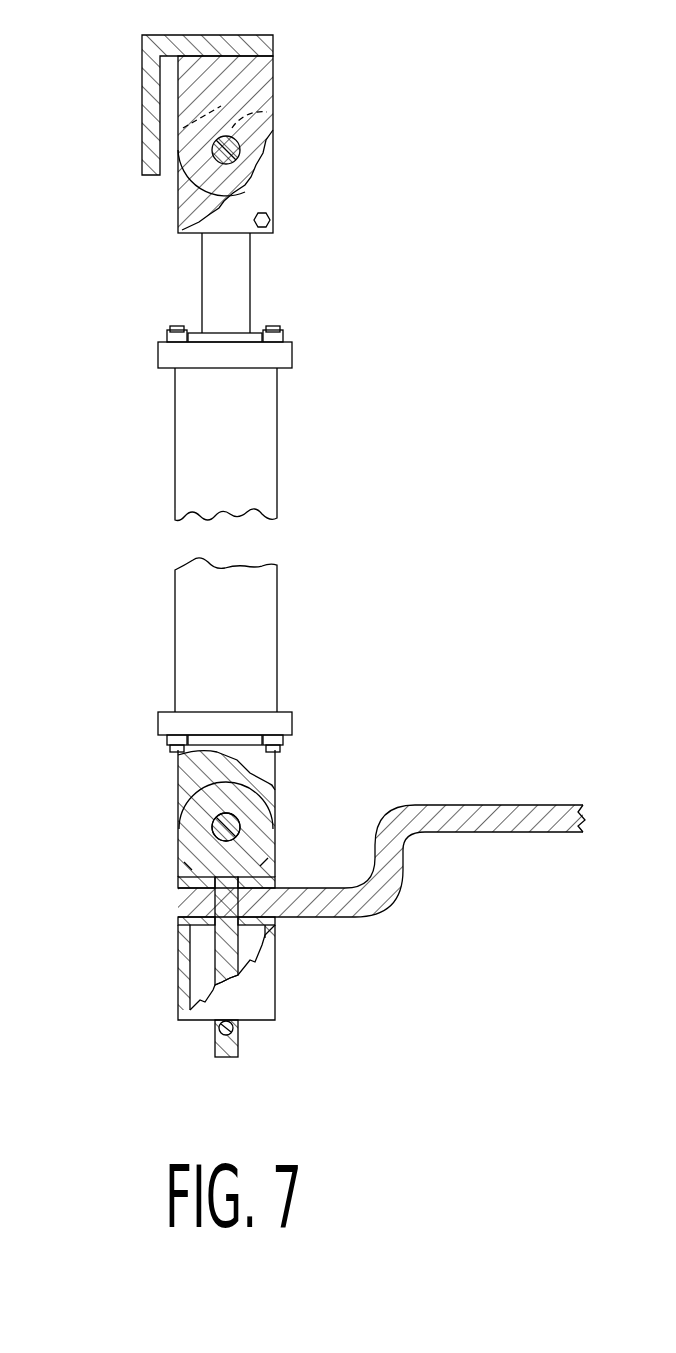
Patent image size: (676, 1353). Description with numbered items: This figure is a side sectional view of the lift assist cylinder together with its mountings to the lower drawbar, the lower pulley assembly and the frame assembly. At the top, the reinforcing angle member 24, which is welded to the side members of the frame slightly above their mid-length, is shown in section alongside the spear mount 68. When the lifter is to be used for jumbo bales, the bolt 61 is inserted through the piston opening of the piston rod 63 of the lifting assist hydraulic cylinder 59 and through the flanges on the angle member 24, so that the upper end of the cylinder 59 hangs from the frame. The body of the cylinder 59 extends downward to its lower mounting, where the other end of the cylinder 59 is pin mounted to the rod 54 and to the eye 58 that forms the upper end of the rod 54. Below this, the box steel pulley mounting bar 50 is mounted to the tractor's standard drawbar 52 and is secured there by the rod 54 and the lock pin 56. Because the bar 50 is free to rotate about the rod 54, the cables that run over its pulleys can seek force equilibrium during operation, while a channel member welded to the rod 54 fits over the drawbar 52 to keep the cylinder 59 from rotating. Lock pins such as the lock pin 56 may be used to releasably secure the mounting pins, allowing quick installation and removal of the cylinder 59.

The reinforcing angle member 24 is at (142, 88).
The spear mount 68 is at (257, 73).
The bolt 61 is at (262, 108).
The piston rod 63 is at (268, 197).
The lifting assist hydraulic cylinder 59 is at (302, 340).
The eye 58 is at (180, 779).
The drawbar 52 is at (342, 907).
The rod 54 is at (223, 946).
The pulley mounting bar 50 is at (177, 988).
The lock pin 56 is at (228, 1057).